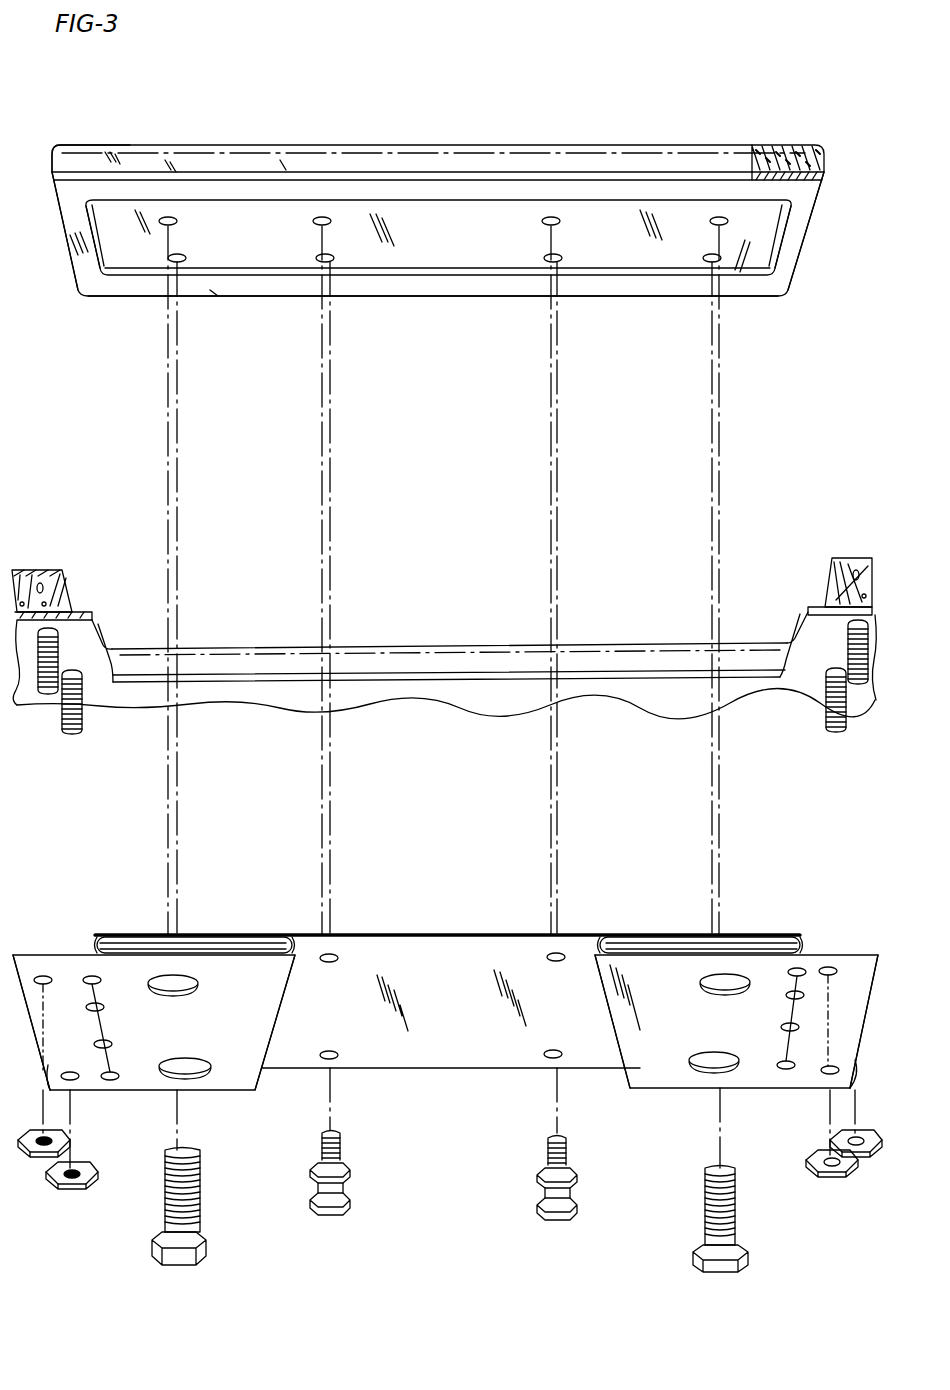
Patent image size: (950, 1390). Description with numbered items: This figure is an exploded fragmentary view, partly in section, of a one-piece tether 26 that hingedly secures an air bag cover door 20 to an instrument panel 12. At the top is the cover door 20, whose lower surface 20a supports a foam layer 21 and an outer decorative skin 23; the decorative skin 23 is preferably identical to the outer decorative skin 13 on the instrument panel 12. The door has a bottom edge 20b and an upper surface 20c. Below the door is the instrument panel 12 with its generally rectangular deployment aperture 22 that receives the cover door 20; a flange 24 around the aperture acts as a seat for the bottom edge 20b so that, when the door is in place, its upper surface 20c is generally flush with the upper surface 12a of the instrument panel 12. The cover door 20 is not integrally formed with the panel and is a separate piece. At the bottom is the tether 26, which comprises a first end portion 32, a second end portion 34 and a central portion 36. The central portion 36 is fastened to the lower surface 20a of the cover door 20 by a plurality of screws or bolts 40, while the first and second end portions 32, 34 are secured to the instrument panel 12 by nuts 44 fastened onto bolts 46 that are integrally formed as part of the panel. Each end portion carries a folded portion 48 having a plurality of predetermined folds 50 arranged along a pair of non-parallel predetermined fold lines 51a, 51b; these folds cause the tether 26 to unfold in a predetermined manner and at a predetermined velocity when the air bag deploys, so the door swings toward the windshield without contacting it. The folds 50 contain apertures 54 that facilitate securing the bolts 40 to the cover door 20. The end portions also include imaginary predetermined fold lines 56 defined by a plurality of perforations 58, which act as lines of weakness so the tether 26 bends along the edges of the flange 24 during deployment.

The instrument panel 12 is at (752, 640).
The upper surface of instrument panel 12a is at (815, 598).
The outer decorative skin on instrument panel 13 is at (849, 558).
The cover door 20 is at (598, 150).
The lower surface of cover door 20a is at (798, 300).
The bottom edge of cover door 20b is at (752, 247).
The upper surface of cover door 20c is at (112, 145).
The foam layer 21 is at (790, 145).
The deployment aperture 22 is at (148, 705).
The outer decorative skin 23 is at (775, 150).
The flange 24 is at (75, 610).
The tether 26 is at (470, 1055).
The first end portion 32 is at (845, 1088).
The second end portion 34 is at (92, 1092).
The central portion 36 is at (442, 952).
The bolts 40 is at (312, 1200).
The nuts 44 is at (85, 1185).
The bolts 46 is at (82, 715).
The folded portion 48 is at (298, 933).
The predetermined folds 50 is at (140, 945).
The predetermined fold line 51a is at (98, 948).
The predetermined fold line 51b is at (320, 947).
The apertures 54 is at (200, 1055).
The predetermined fold lines 56 is at (80, 960).
The perforations 58 is at (104, 1040).